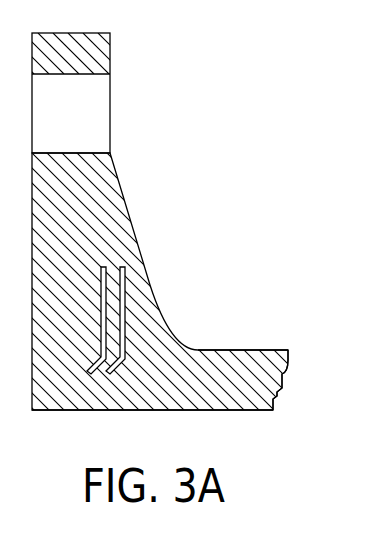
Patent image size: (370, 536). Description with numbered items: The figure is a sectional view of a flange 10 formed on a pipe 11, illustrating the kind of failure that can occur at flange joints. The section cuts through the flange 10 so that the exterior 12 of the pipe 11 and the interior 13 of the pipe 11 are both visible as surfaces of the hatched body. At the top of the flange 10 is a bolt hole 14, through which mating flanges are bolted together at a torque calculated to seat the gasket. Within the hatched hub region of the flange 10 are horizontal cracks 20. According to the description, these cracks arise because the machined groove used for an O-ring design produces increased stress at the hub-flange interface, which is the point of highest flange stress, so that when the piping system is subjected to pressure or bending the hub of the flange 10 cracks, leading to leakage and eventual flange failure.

The flange 10 is at (98, 217).
The pipe 11 is at (207, 350).
The exterior of the pipe 12 is at (253, 330).
The interior of the pipe 13 is at (240, 418).
The bolt hole 14 is at (82, 112).
The horizontal cracks 20 is at (123, 295).